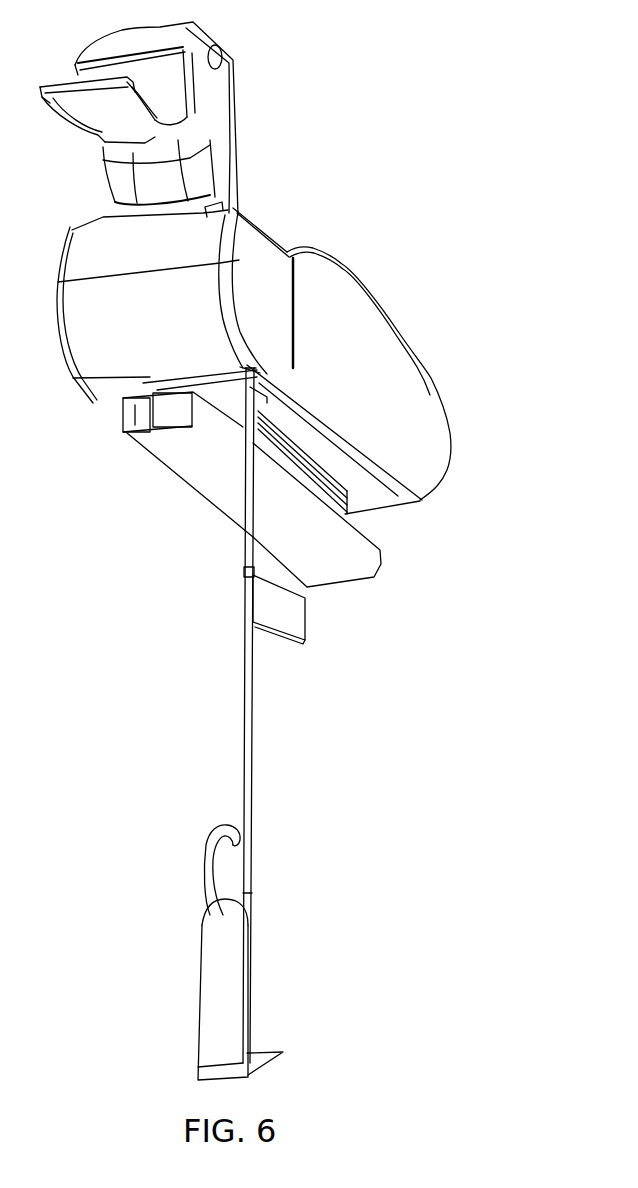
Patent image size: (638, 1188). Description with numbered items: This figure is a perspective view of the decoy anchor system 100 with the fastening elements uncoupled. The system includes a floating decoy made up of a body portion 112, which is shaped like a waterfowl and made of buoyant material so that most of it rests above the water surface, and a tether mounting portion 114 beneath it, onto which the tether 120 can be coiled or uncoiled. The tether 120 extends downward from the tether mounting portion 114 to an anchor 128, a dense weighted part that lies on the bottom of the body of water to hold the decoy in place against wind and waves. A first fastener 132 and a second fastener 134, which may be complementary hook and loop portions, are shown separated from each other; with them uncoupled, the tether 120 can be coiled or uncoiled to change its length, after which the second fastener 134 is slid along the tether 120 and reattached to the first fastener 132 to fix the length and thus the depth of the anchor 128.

The decoy anchor system 100 is at (328, 108).
The body portion 112 is at (397, 330).
The tether mounting portion 114 is at (330, 562).
The tether 120 is at (253, 717).
The anchor 128 is at (235, 980).
The first fastener 132 is at (228, 400).
The second fastener 134 is at (273, 607).